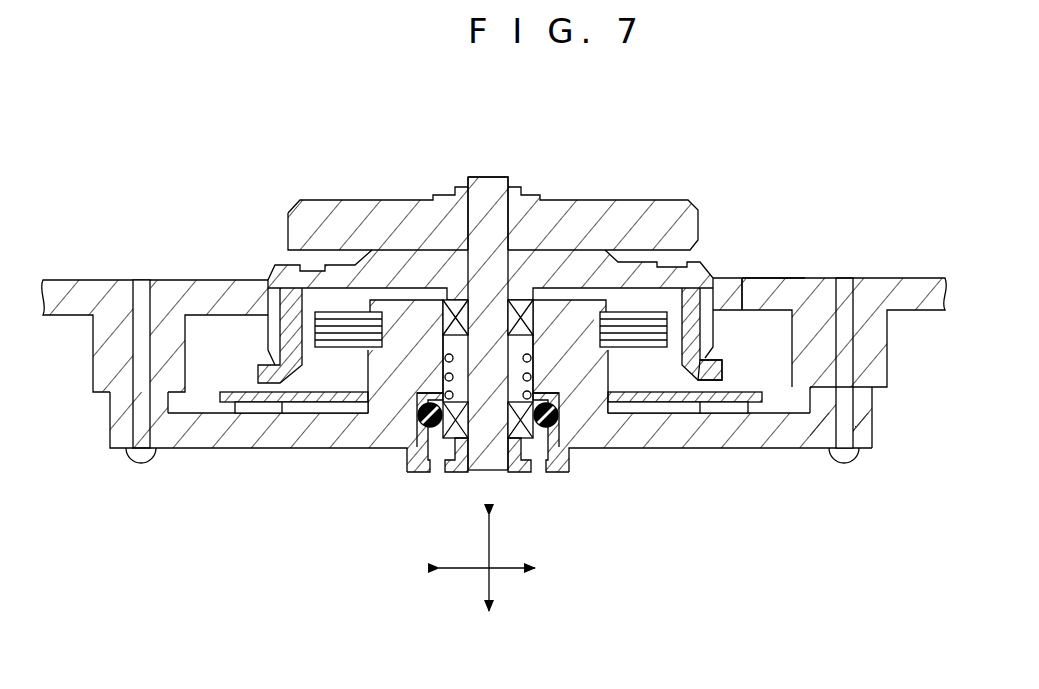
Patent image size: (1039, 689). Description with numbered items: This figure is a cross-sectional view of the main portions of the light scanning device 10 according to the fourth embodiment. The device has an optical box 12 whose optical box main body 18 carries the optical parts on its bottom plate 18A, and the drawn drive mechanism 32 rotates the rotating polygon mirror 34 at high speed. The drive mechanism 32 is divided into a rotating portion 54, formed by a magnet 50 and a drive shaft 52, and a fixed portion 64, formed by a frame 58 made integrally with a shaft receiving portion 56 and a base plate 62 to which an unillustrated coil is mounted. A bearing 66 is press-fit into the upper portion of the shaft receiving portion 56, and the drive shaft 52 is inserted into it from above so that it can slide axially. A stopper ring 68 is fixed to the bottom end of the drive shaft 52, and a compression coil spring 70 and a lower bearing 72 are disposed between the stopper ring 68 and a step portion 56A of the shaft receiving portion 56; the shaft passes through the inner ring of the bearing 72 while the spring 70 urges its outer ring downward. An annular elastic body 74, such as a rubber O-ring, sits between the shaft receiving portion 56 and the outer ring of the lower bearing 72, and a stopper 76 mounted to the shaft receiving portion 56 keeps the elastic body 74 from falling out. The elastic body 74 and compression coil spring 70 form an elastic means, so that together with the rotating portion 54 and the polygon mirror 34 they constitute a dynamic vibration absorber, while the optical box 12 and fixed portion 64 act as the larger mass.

The light scanning device 10 is at (802, 117).
The optical box 12 is at (949, 290).
The optical box main body 18 is at (914, 274).
The bottom plate 18A is at (800, 277).
The drive mechanism 32 is at (271, 262).
The rotating polygon mirror 34 is at (587, 200).
The magnet 50 is at (723, 368).
The drive shaft 52 is at (495, 471).
The rotating portion 54 is at (711, 263).
The shaft receiving portion 56 is at (612, 367).
The step portion 56A is at (474, 332).
The frame 58 is at (317, 449).
The base plate 62 is at (228, 392).
The fixed portion 64 is at (218, 453).
The bearing 66 is at (442, 318).
The stopper ring 68 is at (460, 473).
The compression coil spring 70 is at (540, 392).
The bearing 72 is at (549, 470).
The annular elastic body 74 is at (437, 471).
The stopper 76 is at (423, 470).